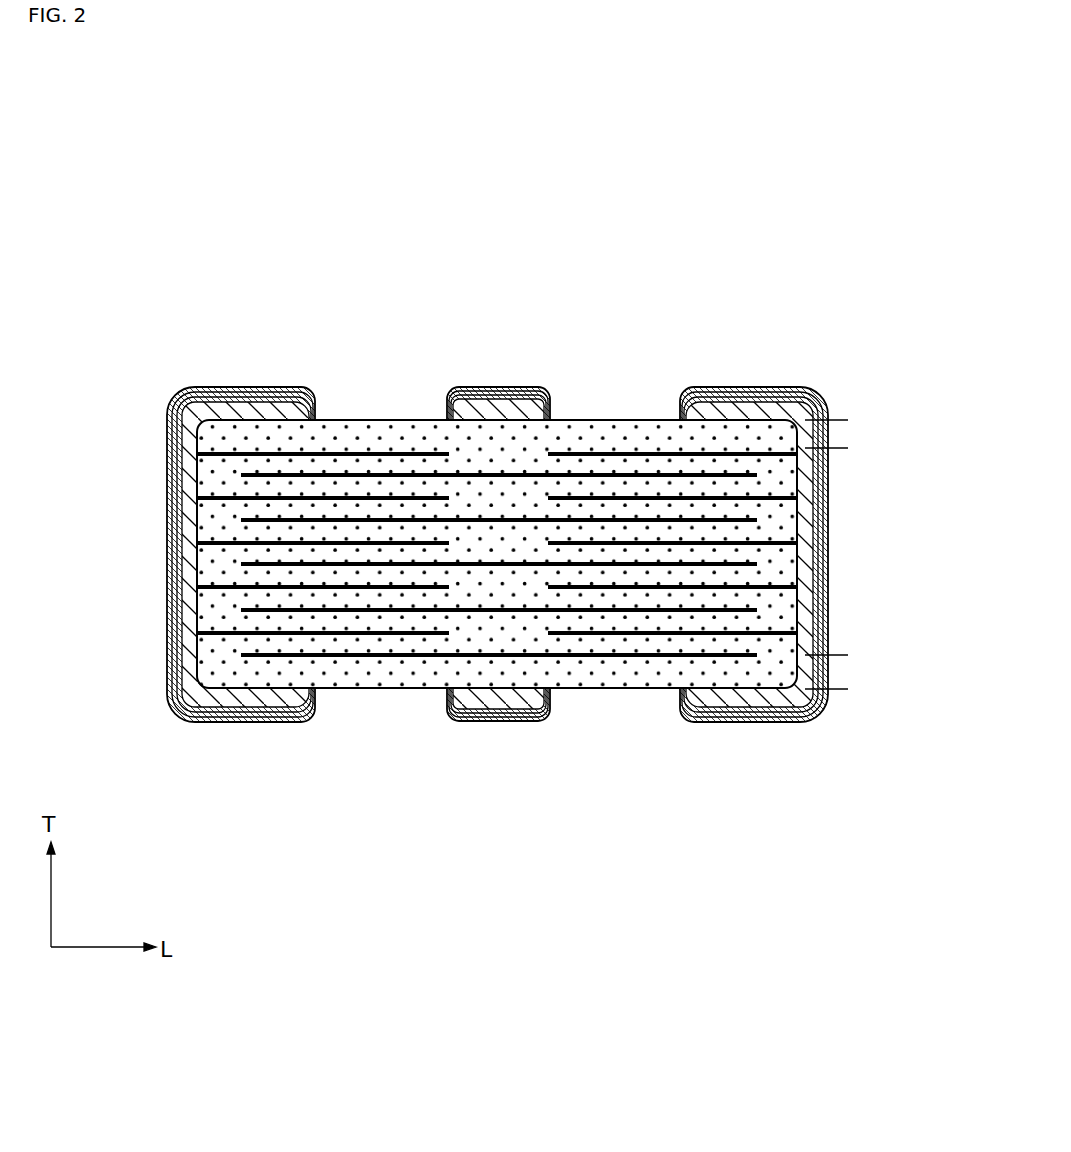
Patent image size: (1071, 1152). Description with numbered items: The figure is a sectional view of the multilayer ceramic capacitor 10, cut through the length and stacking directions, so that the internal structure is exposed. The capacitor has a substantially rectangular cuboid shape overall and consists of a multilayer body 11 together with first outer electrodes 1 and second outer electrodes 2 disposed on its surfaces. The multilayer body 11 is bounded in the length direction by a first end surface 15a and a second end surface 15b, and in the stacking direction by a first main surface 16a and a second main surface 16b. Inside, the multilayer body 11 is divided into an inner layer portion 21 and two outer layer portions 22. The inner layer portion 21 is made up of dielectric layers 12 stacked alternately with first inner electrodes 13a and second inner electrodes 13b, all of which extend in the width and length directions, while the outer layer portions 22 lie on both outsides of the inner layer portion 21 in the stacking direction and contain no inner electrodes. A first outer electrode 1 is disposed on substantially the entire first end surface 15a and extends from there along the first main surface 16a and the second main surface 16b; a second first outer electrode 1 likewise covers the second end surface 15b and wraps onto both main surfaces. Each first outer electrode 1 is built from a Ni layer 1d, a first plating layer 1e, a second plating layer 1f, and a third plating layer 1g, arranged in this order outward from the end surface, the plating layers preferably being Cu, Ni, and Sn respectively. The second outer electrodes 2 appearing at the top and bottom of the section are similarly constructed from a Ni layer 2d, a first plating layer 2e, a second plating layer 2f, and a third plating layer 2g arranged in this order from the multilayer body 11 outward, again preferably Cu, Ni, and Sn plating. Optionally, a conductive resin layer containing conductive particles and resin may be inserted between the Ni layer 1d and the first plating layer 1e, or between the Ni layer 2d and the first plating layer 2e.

The multilayer ceramic capacitor 10 is at (358, 218).
The first outer electrode 1 is at (467, 434).
The Ni layer 1d is at (280, 410).
The first plating layer 1e is at (260, 400).
The second plating layer 1f is at (230, 395).
The third plating layer 1g is at (277, 198).
The second outer electrode 2 is at (496, 552).
The Ni layer 2d is at (462, 394).
The first plating layer 2e is at (483, 394).
The second plating layer 2f is at (500, 392).
The third plating layer 2g is at (526, 548).
The multilayer body 11 is at (500, 556).
The dielectric layer 12 is at (725, 508).
The first inner electrode 13a is at (688, 590).
The second inner electrode 13b is at (355, 567).
The first end surface 15a is at (190, 515).
The second end surface 15b is at (805, 605).
The first main surface 16a is at (368, 418).
The second main surface 16b is at (358, 697).
The inner layer portion 21 is at (854, 452).
The outer layer portion 22 is at (854, 420).